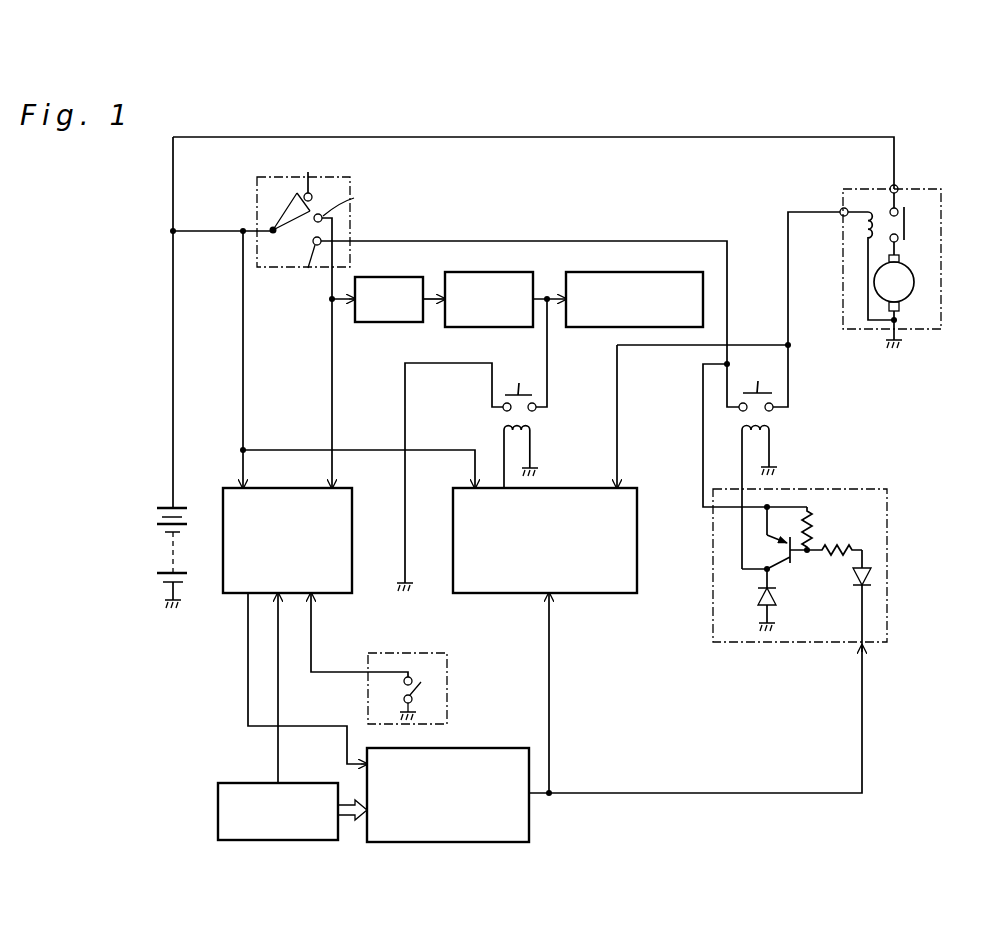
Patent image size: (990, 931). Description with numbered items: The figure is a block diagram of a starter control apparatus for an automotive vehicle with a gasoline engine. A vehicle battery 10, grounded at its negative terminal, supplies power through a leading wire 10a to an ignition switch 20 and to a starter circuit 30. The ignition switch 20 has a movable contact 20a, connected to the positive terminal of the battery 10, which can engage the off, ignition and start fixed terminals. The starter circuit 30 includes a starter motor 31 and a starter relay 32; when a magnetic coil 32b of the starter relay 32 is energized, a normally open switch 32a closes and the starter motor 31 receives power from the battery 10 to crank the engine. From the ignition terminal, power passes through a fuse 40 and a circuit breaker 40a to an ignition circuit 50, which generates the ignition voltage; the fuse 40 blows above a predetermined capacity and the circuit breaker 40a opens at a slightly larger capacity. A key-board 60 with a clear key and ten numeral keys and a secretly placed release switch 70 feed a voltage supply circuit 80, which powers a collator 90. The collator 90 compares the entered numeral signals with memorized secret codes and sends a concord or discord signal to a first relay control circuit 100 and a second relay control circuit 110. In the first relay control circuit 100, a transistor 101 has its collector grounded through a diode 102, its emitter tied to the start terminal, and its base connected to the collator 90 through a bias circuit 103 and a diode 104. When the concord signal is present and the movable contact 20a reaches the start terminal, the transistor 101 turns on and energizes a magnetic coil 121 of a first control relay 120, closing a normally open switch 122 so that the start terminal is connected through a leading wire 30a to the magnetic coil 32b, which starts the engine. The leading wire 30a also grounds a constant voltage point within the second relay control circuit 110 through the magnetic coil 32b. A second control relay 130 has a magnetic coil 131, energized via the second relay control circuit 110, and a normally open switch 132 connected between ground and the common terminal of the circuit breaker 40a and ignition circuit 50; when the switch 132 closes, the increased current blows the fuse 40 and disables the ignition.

The vehicle battery 10 is at (156, 528).
The leading wire 10a is at (578, 137).
The ignition switch 20 is at (327, 218).
The movable contact 20a is at (290, 222).
The starter circuit 30 is at (895, 243).
The leading wire 30a is at (617, 412).
The starter motor 31 is at (915, 280).
The starter relay 32 is at (895, 238).
The normally open switch 32a is at (907, 222).
The magnetic coil 32b is at (863, 227).
The fuse 40 is at (380, 276).
The circuit breaker 40a is at (486, 271).
The ignition circuit 50 is at (659, 271).
The key-board 60 is at (242, 782).
The release switch 70 is at (401, 650).
The voltage supply circuit 80 is at (236, 595).
The collator 90 is at (484, 747).
The first relay control circuit 100 is at (717, 580).
The transistor 101 is at (780, 567).
The diode 102 is at (760, 595).
The bias circuit 103 is at (817, 542).
The diode 104 is at (850, 583).
The second relay control circuit 110 is at (582, 593).
The first control relay 120 is at (787, 457).
The magnetic coil 121 is at (772, 437).
The normally open switch 122 is at (758, 387).
The second control relay 130 is at (500, 445).
The magnetic coil 131 is at (503, 427).
The normally open switch 132 is at (522, 385).